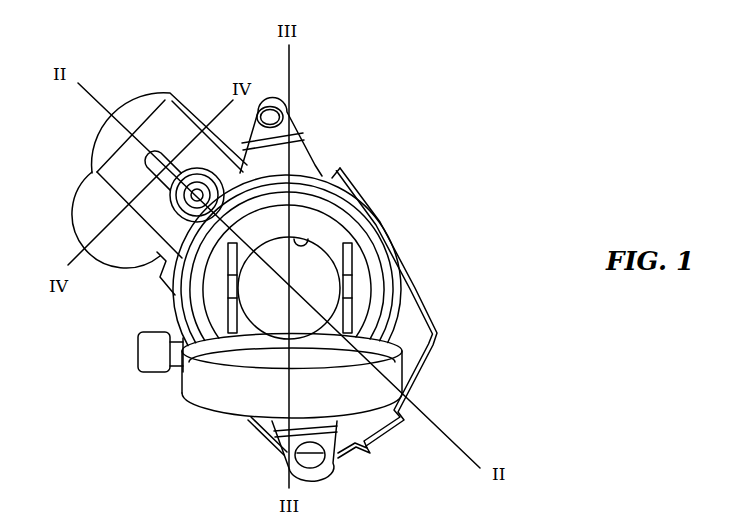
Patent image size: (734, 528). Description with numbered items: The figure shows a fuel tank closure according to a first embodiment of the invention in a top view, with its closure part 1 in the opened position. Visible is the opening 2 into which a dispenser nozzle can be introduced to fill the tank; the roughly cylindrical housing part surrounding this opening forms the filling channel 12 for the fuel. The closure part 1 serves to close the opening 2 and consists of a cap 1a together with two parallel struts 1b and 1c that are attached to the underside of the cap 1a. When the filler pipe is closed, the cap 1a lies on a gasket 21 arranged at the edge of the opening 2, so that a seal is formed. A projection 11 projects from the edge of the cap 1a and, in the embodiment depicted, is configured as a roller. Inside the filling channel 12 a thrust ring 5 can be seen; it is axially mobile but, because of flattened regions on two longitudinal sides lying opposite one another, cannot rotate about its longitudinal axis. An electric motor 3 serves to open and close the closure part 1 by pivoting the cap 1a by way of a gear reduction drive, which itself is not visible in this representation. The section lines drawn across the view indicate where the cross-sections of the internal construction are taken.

The housing 1 is at (482, 268).
The annular ring portion of housing 1a is at (392, 362).
The first engaging portion 1b is at (233, 307).
The second engaging portion 1c is at (348, 312).
The gear case 2 is at (313, 228).
The annular wall 21 is at (377, 267).
The motor 3 is at (82, 220).
The output shaft bore 5 is at (317, 270).
The connector 11 is at (145, 350).
The projection 12 is at (298, 245).